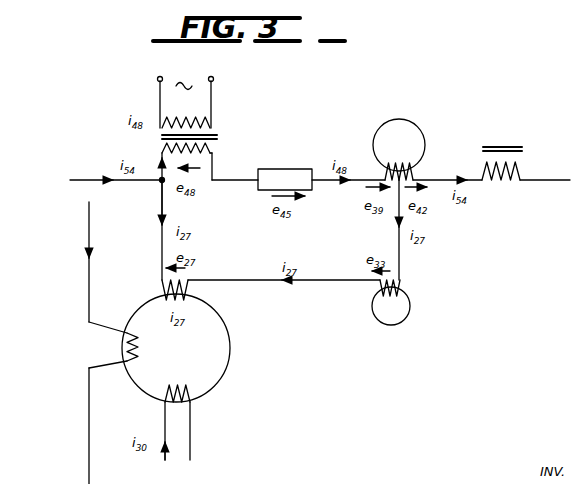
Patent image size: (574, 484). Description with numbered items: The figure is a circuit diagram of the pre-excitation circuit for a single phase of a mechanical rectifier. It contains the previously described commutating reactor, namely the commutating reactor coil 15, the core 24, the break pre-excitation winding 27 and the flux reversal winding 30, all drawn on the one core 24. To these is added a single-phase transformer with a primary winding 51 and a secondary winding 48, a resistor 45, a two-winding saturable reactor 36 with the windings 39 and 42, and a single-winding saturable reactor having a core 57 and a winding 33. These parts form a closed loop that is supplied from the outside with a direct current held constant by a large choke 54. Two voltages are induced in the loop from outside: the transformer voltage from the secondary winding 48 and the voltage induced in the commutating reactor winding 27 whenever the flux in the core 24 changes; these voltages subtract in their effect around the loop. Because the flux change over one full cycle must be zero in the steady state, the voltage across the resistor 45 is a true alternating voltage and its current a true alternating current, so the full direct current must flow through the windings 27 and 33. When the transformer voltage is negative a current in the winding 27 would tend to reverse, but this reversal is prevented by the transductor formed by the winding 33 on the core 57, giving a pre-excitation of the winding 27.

The primary winding 51 is at (205, 112).
The secondary winding 48 is at (215, 152).
The resistor 45 is at (300, 165).
The two-winding saturable reactor 36 is at (412, 114).
The winding 39 is at (385, 172).
The winding 42 is at (415, 172).
The choke 54 is at (522, 171).
The winding 33 is at (403, 284).
The core 57 is at (392, 325).
The core 24 is at (230, 350).
The break pre-excitation winding 27 is at (175, 290).
The commutating reactor coil 15 is at (138, 348).
The flux reversal winding 30 is at (195, 405).